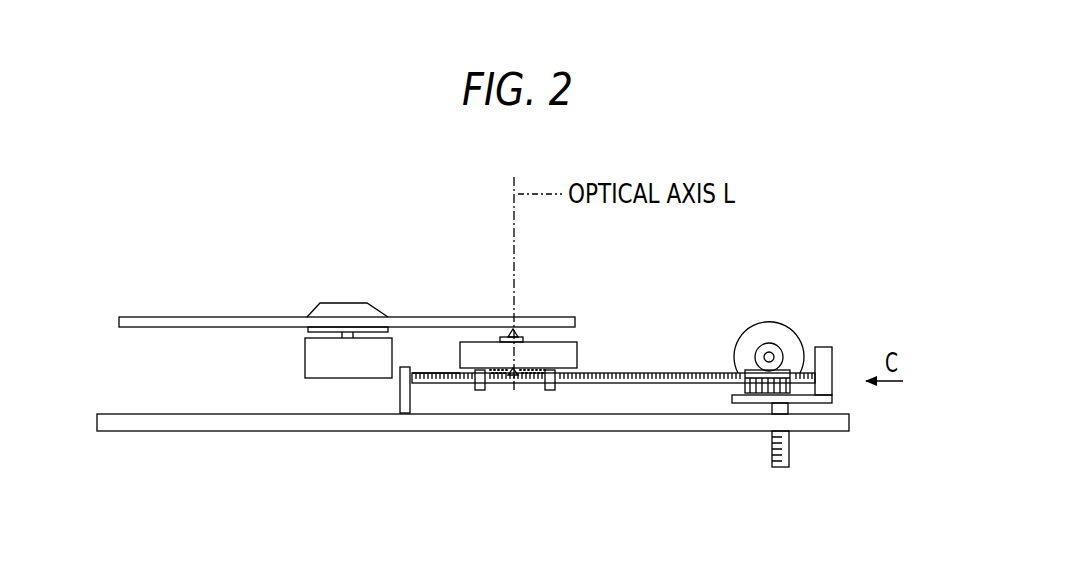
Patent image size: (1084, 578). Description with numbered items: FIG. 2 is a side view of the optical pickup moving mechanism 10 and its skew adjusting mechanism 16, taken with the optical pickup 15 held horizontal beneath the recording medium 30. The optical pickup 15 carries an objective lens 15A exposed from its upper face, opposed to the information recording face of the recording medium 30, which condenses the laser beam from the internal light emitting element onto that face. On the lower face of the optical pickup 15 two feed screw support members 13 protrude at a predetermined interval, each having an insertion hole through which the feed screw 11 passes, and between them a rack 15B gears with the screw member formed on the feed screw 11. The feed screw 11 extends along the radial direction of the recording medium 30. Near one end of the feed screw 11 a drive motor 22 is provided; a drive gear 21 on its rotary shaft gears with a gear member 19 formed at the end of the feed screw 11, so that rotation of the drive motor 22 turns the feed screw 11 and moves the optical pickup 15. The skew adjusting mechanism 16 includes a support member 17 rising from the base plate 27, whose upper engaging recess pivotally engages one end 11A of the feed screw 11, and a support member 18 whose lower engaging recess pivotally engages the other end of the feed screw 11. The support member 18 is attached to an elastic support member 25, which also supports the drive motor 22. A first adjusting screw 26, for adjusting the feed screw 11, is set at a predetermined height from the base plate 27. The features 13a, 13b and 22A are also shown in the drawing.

The optical pickup moving mechanism 10 is at (624, 306).
The feed screw 11 is at (617, 385).
The one end of the feed screw 11A is at (437, 372).
The feed screw support member 13 is at (305, 358).
The shaft 13a is at (326, 333).
The knob 13b is at (348, 303).
The optical pickup 15 is at (577, 356).
The objective lens 15A is at (523, 337).
The rack 15B is at (500, 376).
The skew adjusting mechanism 16 is at (782, 478).
The support member 17 is at (404, 413).
The support member 18 is at (820, 347).
The gear member to be driven 19 is at (760, 390).
The drive gear 21 is at (760, 345).
The drive motor 22 is at (775, 322).
The shaft hole 22A is at (757, 357).
The elastic support member 25 is at (832, 399).
The first adjusting screw 26 is at (790, 447).
The base plate 27 is at (849, 422).
The recording medium 30 is at (420, 317).